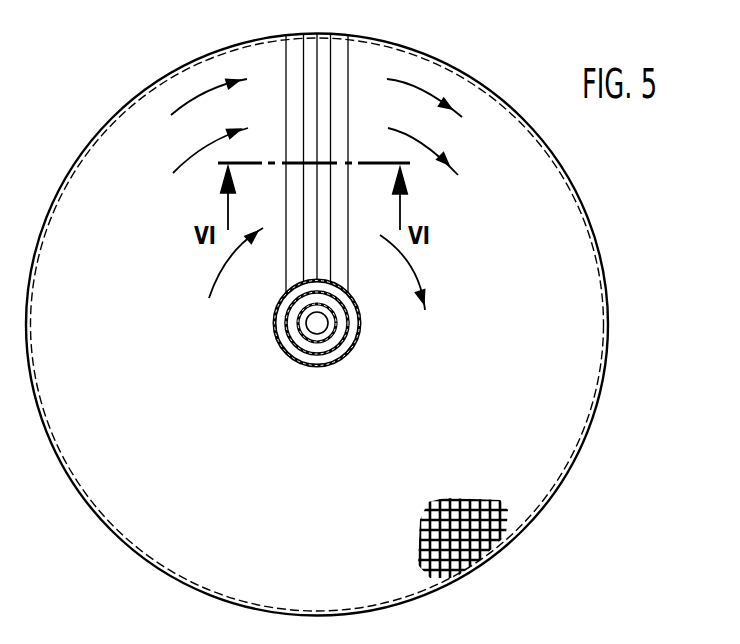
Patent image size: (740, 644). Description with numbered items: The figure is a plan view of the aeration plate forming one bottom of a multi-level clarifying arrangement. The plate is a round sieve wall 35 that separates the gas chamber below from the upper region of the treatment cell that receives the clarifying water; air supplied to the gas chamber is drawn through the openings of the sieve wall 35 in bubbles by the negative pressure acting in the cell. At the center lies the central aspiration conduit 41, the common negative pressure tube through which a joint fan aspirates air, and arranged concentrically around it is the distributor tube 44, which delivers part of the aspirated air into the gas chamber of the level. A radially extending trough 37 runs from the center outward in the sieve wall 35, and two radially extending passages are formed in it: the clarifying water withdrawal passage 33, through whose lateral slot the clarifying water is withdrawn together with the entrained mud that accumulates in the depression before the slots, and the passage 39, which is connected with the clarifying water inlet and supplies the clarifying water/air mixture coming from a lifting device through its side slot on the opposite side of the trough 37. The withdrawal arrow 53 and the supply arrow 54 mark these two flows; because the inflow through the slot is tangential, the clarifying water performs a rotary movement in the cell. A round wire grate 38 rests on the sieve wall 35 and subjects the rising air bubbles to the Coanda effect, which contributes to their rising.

The clarifying water withdrawal passage 33 is at (312, 257).
The sieve wall 35 is at (90, 485).
The radially extending trough 37 is at (298, 127).
The round wire grate 38 is at (420, 542).
The passage 39 is at (322, 265).
The central aspiration conduit 41 is at (300, 337).
The distributor tube 44 is at (348, 340).
The withdrawal arrow 53 is at (172, 113).
The supply arrow 54 is at (435, 103).